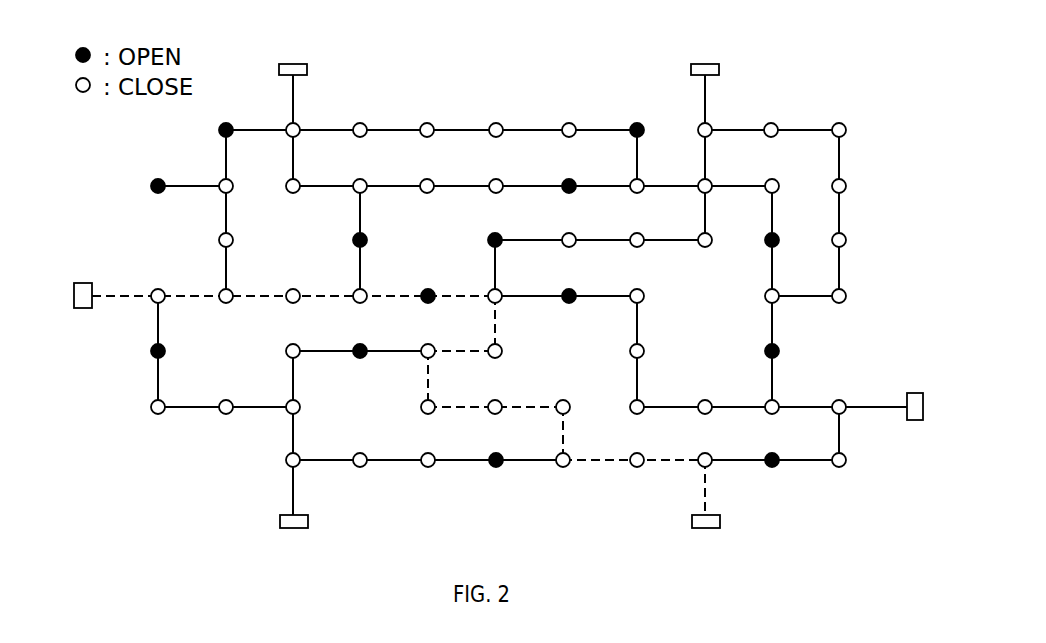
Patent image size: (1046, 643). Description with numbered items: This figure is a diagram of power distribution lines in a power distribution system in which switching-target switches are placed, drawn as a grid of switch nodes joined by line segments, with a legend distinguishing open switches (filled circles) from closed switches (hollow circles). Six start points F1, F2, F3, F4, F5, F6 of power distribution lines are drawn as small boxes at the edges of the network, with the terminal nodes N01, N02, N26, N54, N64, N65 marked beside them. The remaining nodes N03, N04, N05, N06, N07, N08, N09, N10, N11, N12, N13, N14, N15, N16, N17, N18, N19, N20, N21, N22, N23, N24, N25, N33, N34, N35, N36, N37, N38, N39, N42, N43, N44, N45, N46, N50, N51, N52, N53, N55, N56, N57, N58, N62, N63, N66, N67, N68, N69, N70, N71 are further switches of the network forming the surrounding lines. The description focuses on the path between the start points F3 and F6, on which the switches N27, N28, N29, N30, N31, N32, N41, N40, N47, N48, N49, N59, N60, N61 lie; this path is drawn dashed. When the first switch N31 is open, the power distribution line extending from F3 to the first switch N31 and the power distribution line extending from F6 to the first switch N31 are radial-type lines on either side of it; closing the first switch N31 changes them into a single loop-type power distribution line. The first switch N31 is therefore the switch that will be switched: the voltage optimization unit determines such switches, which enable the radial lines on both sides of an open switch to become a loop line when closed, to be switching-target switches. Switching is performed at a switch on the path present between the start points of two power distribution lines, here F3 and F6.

The node N01 (feeder F1 terminal) N01 is at (271, 69).
The node N02 (feeder F2 terminal) N02 is at (683, 69).
The node N03 (open switch) N03 is at (210, 144).
The node N04 is at (276, 144).
The node N05 is at (724, 144).
The node N06 is at (790, 144).
The node N07 is at (858, 144).
The node N08 is at (210, 200).
The node N09 is at (276, 200).
The node N10 is at (343, 200).
The node N11 is at (429, 200).
The node N12 is at (497, 200).
The node N13 (open switch) N13 is at (571, 200).
The node N14 is at (637, 200).
The node N15 is at (724, 200).
The node N16 is at (790, 200).
The node N17 is at (858, 200).
The node N18 is at (209, 254).
The node N19 (open switch) N19 is at (343, 254).
The node N20 (open switch) N20 is at (477, 254).
The node N21 is at (569, 254).
The node N22 is at (636, 254).
The node N23 is at (706, 254).
The node N24 (open switch) N24 is at (790, 254).
The node N25 is at (858, 254).
The node N26 (feeder F3 terminal) N26 is at (82, 311).
The switch N27 is at (141, 310).
The switch N28 is at (227, 310).
The switch N29 is at (294, 310).
The switch N30 is at (361, 310).
The first switch N31 is at (427, 310).
The switch N32 is at (514, 310).
The node N33 (open switch) N33 is at (591, 310).
The node N34 is at (655, 310).
The node N35 is at (790, 310).
The node N36 is at (858, 310).
The node N37 (open switch) N37 is at (141, 365).
The node N38 is at (276, 365).
The node N39 (open switch) N39 is at (361, 365).
The switch N40 is at (448, 365).
The switch N41 is at (514, 365).
The node N42 is at (655, 365).
The node N43 (open switch) N43 is at (790, 365).
The node N44 is at (160, 421).
The node N45 is at (228, 421).
The node N46 is at (313, 421).
The switch N47 is at (427, 421).
The switch N48 is at (496, 421).
The switch N49 is at (581, 421).
The node N50 is at (639, 421).
The node N51 is at (706, 421).
The node N52 is at (772, 421).
The node N53 is at (857, 421).
The node N54 (feeder F4 terminal) N54 is at (916, 422).
The node N55 is at (275, 474).
The node N56 is at (361, 474).
The node N57 is at (427, 474).
The node N58 (open switch) N58 is at (496, 474).
The switch N59 is at (564, 474).
The switch N60 is at (639, 474).
The switch N61 is at (724, 474).
The node N62 (open switch) N62 is at (791, 474).
The node N63 is at (857, 474).
The node N64 (feeder F5 terminal) N64 is at (271, 523).
The node N65 (feeder F6 terminal) N65 is at (683, 523).
The node N66 (open switch) N66 is at (139, 200).
The node N67 is at (364, 144).
The node N68 is at (429, 144).
The node N69 is at (497, 144).
The node N70 is at (571, 144).
The node N71 (open switch) N71 is at (654, 144).
The feeder F1 is at (315, 93).
The feeder F2 is at (727, 93).
The power distribution line start point F3 is at (115, 272).
The feeder F4 is at (884, 384).
The feeder F5 is at (315, 498).
The power distribution line start point F6 is at (727, 498).